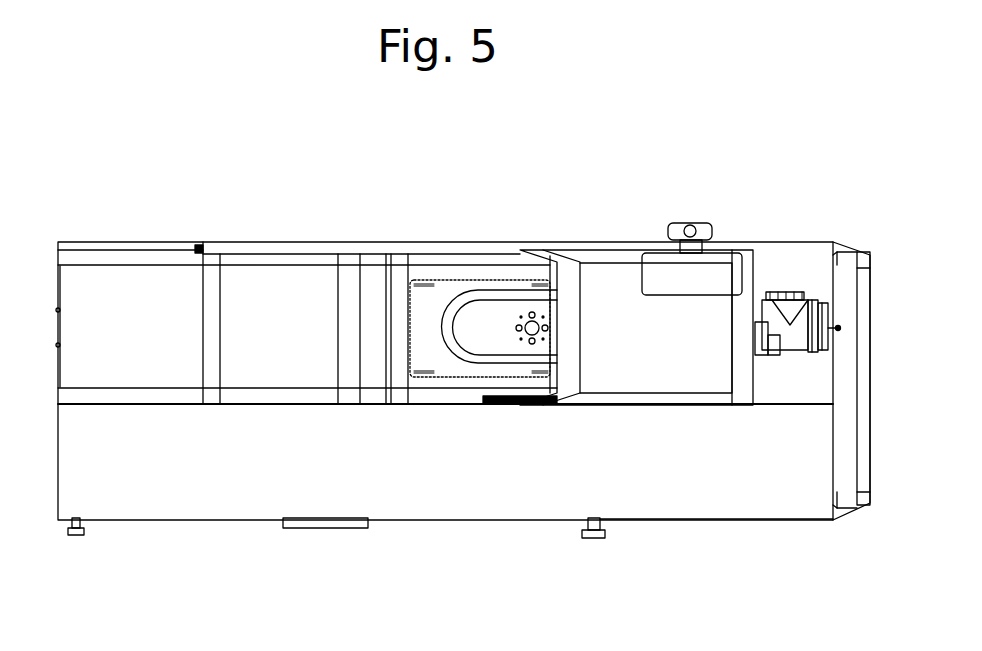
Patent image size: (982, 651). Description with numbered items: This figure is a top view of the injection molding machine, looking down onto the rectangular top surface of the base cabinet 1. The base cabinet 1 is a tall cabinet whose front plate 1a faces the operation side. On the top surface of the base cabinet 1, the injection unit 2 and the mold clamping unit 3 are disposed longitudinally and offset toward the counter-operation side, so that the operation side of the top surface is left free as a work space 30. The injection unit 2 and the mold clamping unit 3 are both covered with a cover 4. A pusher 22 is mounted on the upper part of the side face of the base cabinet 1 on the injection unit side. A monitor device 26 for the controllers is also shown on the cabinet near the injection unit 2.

The base cabinet 1 is at (248, 518).
The front plate 1a is at (712, 518).
The injection unit 2 is at (490, 290).
The mold clamping unit 3 is at (297, 292).
The cover 4 is at (167, 292).
The pusher 22 is at (863, 290).
The monitor device 26 is at (657, 263).
The work space 30 is at (513, 477).